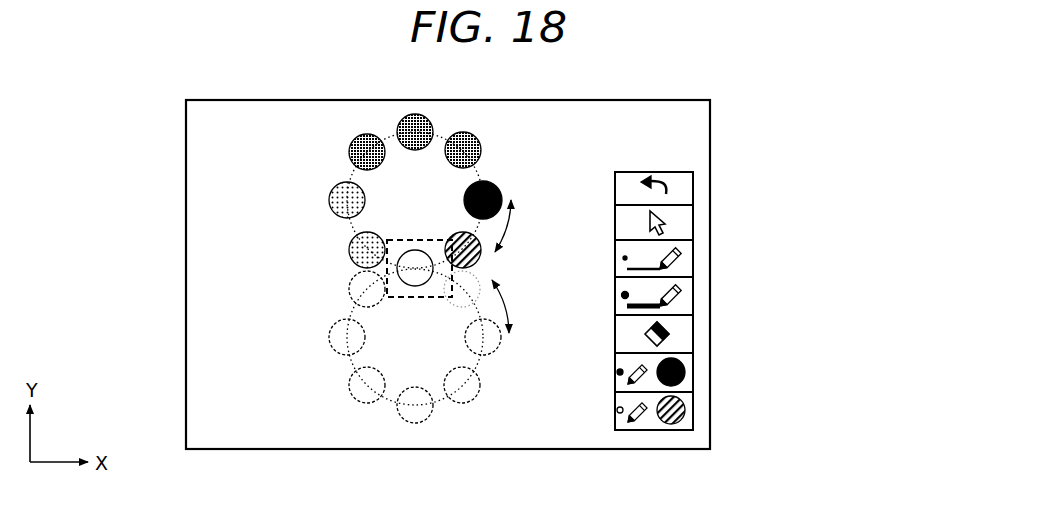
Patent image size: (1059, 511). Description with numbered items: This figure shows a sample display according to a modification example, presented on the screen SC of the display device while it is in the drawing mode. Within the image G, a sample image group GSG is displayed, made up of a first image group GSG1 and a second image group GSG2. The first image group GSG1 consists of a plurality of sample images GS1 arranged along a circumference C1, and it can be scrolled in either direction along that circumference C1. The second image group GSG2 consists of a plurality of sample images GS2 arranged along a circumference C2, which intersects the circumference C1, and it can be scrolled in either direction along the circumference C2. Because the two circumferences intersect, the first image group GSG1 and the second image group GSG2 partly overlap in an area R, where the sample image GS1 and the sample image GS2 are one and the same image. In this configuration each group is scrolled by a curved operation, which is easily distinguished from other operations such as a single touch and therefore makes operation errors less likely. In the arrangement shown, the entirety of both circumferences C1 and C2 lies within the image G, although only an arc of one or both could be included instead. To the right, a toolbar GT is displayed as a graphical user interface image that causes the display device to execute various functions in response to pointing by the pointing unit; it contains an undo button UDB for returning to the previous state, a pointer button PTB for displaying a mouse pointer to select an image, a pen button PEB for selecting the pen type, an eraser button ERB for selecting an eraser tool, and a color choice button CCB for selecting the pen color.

The screen SC is at (490, 274).
The image G is at (713, 152).
The sample image group GSG is at (462, 267).
The first image group GSG1 is at (427, 194).
The second image group GSG2 is at (446, 350).
The sample image GS1 is at (498, 187).
The sample image GS2 is at (480, 385).
The circumference C1 is at (350, 245).
The circumference C2 is at (349, 303).
The area R is at (348, 327).
The toolbar GT is at (704, 274).
The undo button UDB is at (695, 182).
The pointer button PTB is at (695, 219).
The pen button PEB is at (695, 285).
The eraser button ERB is at (695, 335).
The color choice button CCB is at (695, 400).